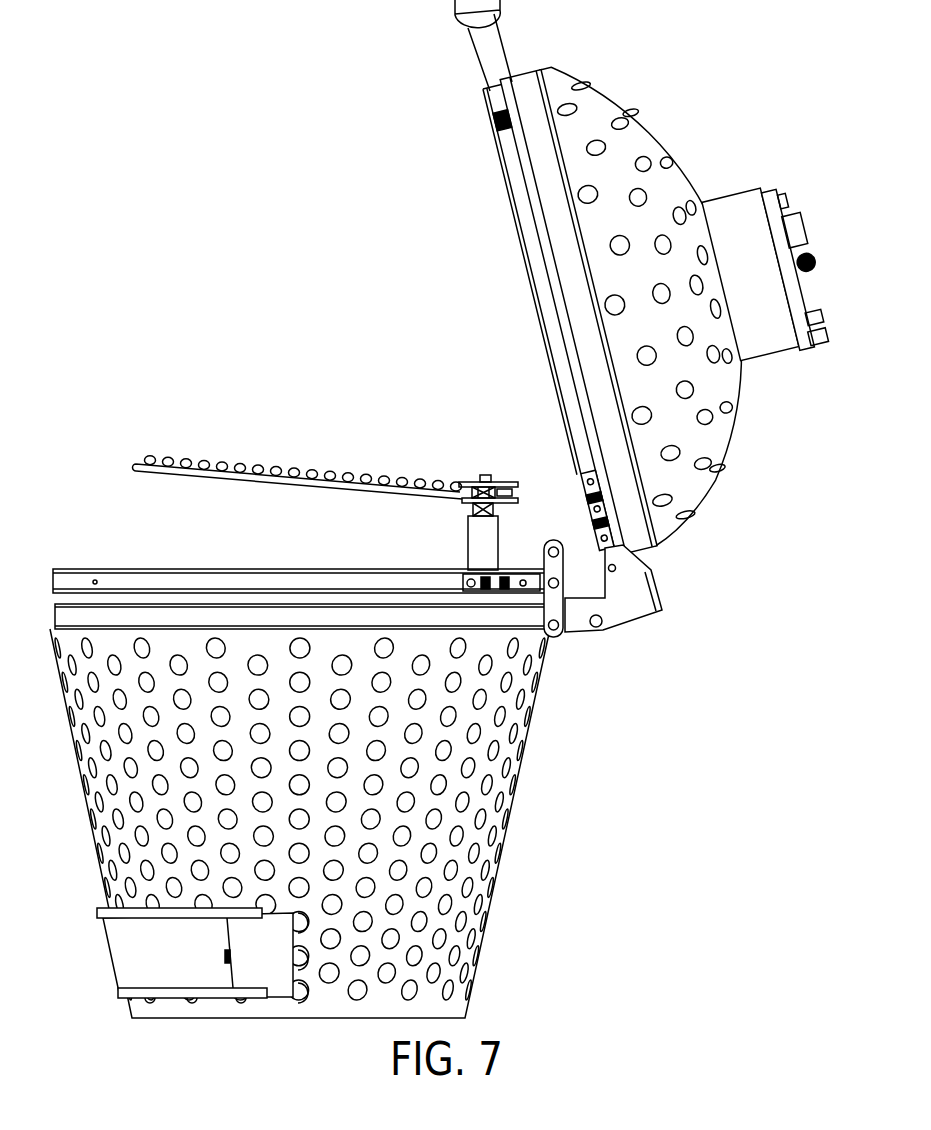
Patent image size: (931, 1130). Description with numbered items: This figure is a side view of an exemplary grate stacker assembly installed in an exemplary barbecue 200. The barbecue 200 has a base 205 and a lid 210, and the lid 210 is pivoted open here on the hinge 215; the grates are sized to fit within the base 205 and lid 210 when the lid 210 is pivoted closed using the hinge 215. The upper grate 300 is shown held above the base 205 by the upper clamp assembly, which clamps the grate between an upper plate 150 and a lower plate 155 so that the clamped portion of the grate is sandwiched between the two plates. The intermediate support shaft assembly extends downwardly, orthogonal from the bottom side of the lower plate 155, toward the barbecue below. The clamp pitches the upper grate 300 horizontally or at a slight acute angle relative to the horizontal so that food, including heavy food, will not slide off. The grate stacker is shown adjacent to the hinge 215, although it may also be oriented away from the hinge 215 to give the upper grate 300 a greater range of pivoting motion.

The upper plate 150 is at (468, 478).
The lower plate 155 is at (520, 523).
The barbecue 200 is at (507, 923).
The base 205 is at (510, 813).
The lid 210 is at (695, 490).
The hinge 215 is at (624, 607).
The upper grate 300 is at (268, 468).